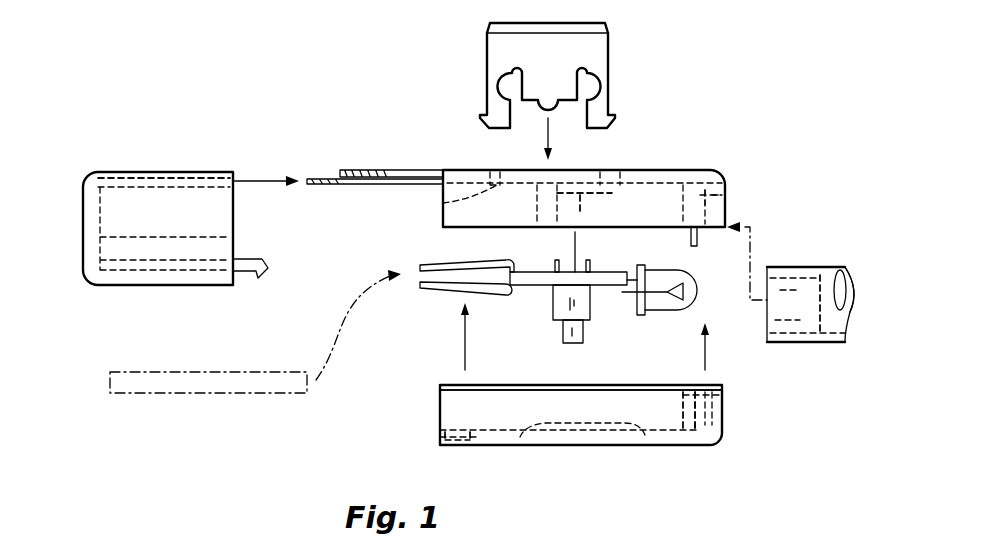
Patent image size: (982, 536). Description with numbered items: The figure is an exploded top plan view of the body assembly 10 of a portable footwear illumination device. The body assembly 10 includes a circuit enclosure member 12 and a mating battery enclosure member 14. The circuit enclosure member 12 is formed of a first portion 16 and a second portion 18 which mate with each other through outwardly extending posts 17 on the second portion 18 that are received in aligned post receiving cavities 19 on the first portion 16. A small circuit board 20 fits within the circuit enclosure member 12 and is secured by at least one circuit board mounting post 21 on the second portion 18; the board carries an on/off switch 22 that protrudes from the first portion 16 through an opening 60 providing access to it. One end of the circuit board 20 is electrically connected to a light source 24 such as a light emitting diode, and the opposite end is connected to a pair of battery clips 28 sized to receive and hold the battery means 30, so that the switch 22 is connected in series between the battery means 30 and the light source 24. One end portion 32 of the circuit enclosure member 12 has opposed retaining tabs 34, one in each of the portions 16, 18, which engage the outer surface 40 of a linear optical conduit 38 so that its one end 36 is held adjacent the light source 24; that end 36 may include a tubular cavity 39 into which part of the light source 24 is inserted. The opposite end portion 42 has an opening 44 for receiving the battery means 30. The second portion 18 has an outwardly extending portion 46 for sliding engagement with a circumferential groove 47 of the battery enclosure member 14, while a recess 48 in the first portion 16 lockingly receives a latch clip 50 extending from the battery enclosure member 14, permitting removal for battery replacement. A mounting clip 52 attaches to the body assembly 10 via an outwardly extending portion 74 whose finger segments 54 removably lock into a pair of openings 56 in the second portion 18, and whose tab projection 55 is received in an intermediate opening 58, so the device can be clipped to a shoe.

The body assembly 10 is at (370, 82).
The circuit enclosure member 12 is at (749, 163).
The battery enclosure member 14 is at (76, 254).
The first circuit enclosure portion 16 is at (630, 447).
The outwardly extending post 17 is at (690, 240).
The second circuit enclosure portion 18 is at (706, 170).
The post receiving cavity 19 is at (690, 448).
The circuit board 20 is at (556, 284).
The circuit board mounting post 21 is at (560, 228).
The on/off switch 22 is at (584, 334).
The light source 24 is at (656, 305).
The battery clips 28 is at (437, 290).
The battery means 30 is at (210, 393).
The one end portion of circuit enclosure 32 is at (728, 215).
The retaining tab 34 is at (737, 200).
The one end of optical conduit 36 is at (767, 330).
The linear optical conduit 38 is at (855, 280).
The tubular cavity 39 is at (795, 265).
The outer surface of optical conduit 40 is at (838, 315).
The opposite end portion of circuit enclosure 42 is at (443, 222).
The opening 44 is at (430, 190).
The outwardly extending portion 46 is at (366, 170).
The circumferential groove 47 is at (141, 170).
The recess 48 is at (465, 452).
The latch clip 50 is at (251, 260).
The mounting clip 52 is at (483, 27).
The finger segments 54 is at (487, 88).
The mounting clip tab projection 55 is at (541, 117).
The openings 56 is at (602, 170).
The intermediate opening 58 is at (556, 168).
The opening 60 is at (580, 440).
The outwardly extending portion of mounting clip 74 is at (575, 50).